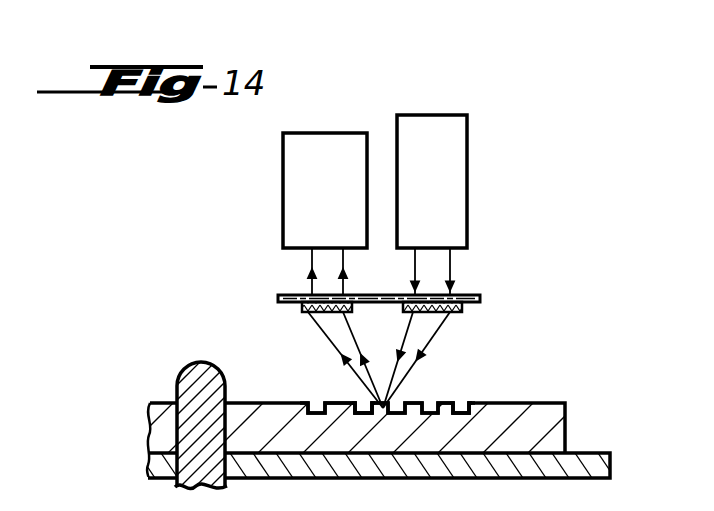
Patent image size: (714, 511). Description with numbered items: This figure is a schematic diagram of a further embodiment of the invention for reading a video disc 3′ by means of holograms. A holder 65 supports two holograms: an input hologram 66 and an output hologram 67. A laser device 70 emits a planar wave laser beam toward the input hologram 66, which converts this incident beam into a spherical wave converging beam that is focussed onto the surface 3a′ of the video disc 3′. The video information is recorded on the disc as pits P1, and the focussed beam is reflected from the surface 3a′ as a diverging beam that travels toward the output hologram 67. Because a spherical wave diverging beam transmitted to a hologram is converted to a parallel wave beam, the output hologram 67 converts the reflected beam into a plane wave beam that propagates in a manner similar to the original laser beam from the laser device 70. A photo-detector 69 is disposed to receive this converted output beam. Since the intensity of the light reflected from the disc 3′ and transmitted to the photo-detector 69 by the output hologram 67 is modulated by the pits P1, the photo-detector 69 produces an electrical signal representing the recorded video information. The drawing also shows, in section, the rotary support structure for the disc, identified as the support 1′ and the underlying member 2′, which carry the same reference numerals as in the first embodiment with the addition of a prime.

The photo-detector 69 is at (283, 178).
The laser device 70 is at (467, 182).
The holder 65 is at (481, 297).
The input hologram 66 is at (462, 311).
The output hologram 67 is at (306, 313).
The video disc 3′ is at (556, 426).
The surface of video disc 3a′ is at (472, 404).
The substrate 2′ is at (600, 466).
The spindle / pin 1′ is at (198, 366).
The pits P1 is at (348, 404).